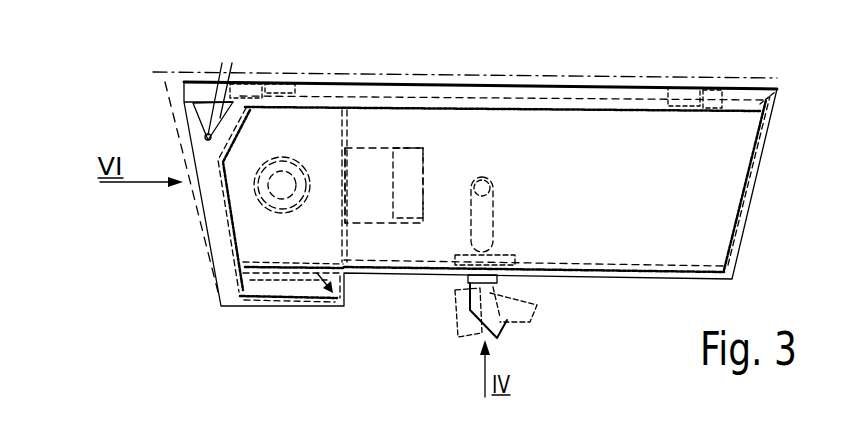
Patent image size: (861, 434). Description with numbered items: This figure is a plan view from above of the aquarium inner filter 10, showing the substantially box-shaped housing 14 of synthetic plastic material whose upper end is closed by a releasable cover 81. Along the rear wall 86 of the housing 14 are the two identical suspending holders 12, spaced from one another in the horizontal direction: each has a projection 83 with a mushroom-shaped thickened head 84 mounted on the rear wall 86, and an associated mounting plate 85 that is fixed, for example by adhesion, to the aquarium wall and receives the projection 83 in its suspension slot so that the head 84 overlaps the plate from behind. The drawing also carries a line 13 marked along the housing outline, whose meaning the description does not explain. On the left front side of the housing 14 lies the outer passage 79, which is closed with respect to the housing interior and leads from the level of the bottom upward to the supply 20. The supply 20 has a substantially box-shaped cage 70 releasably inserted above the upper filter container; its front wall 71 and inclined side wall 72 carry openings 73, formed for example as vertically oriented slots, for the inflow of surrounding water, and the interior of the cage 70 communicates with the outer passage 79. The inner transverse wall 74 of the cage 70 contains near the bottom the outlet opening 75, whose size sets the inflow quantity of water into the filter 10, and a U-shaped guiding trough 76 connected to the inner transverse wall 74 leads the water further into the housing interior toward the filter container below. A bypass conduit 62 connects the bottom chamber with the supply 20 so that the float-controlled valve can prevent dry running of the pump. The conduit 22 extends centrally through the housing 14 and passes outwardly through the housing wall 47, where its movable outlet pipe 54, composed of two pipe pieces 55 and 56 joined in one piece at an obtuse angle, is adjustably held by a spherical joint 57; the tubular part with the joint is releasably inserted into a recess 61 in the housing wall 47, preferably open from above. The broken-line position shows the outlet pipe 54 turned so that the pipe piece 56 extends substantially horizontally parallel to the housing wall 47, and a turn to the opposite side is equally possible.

The filter 10 is at (752, 258).
The suspending holder 12 is at (733, 71).
The cover line 13 is at (153, 76).
The housing 14 is at (757, 186).
The supply 20 is at (262, 237).
The conduit 22 is at (488, 184).
The housing wall 47 is at (610, 277).
The outlet pipe 54 is at (460, 315).
The pipe piece 55 is at (490, 293).
The pipe piece 56 is at (507, 320).
The spherical joint 57 is at (458, 281).
The recess 61 is at (505, 258).
The bypass conduit 62 is at (278, 177).
The cage 70 is at (340, 308).
The front wall 71 is at (267, 317).
The side wall 72 is at (260, 233).
The openings 73 is at (293, 317).
The inner transverse wall 74 is at (350, 110).
The outlet opening 75 is at (343, 183).
The guiding trough 76 is at (380, 177).
The outer passage 79 is at (270, 282).
The cover 81 is at (723, 157).
The projection 83 is at (697, 112).
The thickened head 84 is at (213, 100).
The mounting plate 85 is at (283, 90).
The rear wall 86 is at (542, 110).